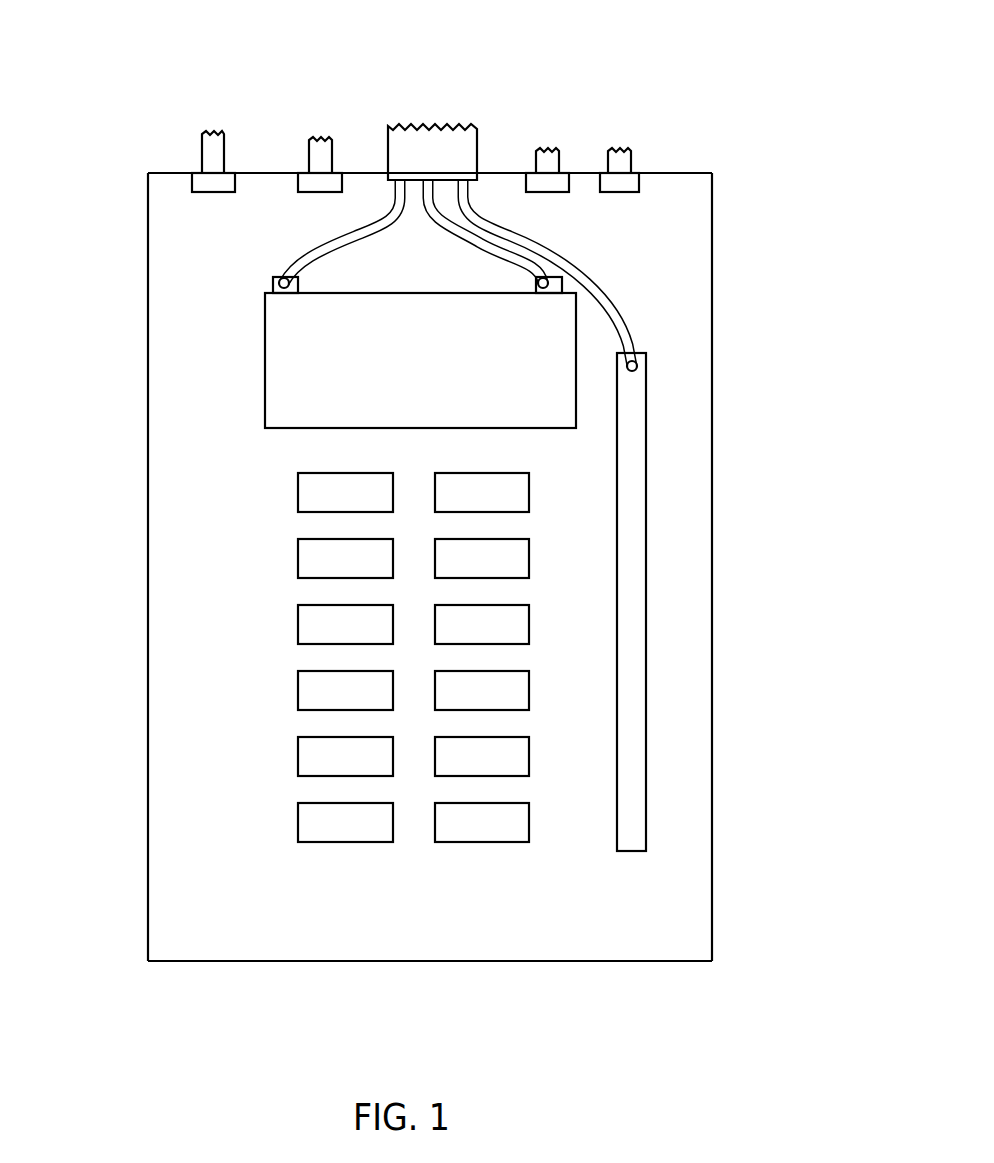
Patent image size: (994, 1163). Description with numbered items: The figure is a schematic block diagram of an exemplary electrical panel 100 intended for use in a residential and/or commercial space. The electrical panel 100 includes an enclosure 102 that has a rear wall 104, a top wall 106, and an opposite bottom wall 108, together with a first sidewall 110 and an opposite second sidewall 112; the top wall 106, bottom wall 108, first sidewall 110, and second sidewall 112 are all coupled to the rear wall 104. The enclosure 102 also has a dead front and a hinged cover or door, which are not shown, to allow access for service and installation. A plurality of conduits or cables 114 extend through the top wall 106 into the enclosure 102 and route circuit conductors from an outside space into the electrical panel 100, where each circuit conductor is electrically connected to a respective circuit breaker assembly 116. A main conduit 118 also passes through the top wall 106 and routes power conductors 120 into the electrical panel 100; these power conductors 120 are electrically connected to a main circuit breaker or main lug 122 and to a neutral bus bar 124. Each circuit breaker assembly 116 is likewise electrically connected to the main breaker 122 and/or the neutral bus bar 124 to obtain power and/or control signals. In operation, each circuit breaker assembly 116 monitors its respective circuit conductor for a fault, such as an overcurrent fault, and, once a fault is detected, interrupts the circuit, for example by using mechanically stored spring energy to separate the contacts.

The electrical panel 100 is at (721, 63).
The enclosure 102 is at (148, 470).
The rear wall 104 is at (180, 951).
The top wall 106 is at (700, 173).
The bottom wall 108 is at (692, 951).
The first sidewall 110 is at (148, 293).
The second sidewall 112 is at (713, 303).
The conduits 114 is at (202, 152).
The circuit breaker assembly 116 is at (413, 657).
The main conduit 118 is at (477, 131).
The power conductors 120 is at (371, 236).
The main circuit breaker 122 is at (433, 368).
The neutral bus bar 124 is at (647, 480).